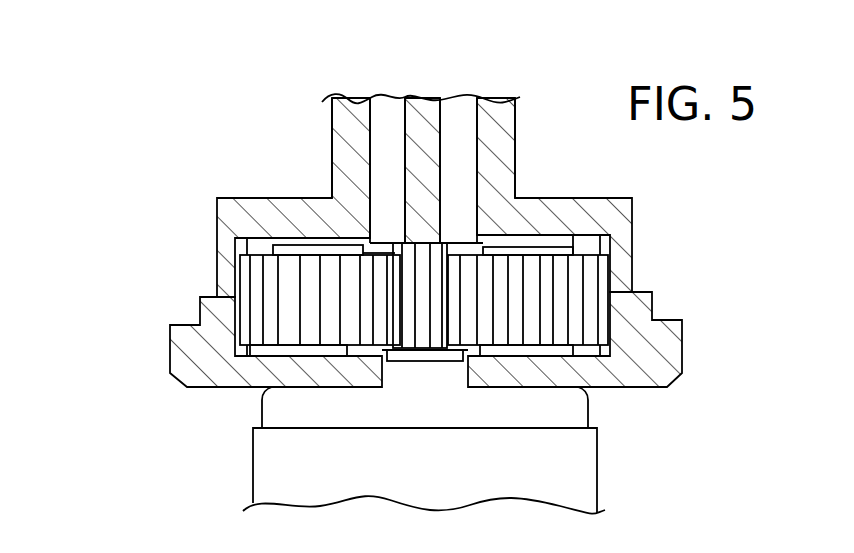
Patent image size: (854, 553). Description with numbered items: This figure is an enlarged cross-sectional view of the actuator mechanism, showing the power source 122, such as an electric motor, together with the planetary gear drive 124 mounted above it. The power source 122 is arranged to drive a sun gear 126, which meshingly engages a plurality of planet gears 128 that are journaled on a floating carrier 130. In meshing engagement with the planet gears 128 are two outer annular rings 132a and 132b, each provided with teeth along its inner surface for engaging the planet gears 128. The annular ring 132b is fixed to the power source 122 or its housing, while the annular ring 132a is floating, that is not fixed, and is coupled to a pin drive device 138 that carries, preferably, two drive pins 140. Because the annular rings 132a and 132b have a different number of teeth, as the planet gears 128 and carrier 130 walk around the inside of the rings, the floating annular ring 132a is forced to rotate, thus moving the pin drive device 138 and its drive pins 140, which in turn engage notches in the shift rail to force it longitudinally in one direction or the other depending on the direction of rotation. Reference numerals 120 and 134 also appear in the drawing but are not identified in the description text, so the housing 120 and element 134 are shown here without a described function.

The bearing housing 120 is at (633, 210).
The power source 122 is at (597, 473).
The planetary gear drive 124 is at (633, 245).
The sun gear 126 is at (403, 350).
The planet gears 128 is at (260, 237).
The floating carrier 130 is at (293, 243).
The annular ring 132a is at (217, 228).
The annular ring 132b is at (170, 343).
The bearing seat 134 is at (217, 265).
The pin drive device 138 is at (332, 113).
The drive pins 140 is at (382, 100).